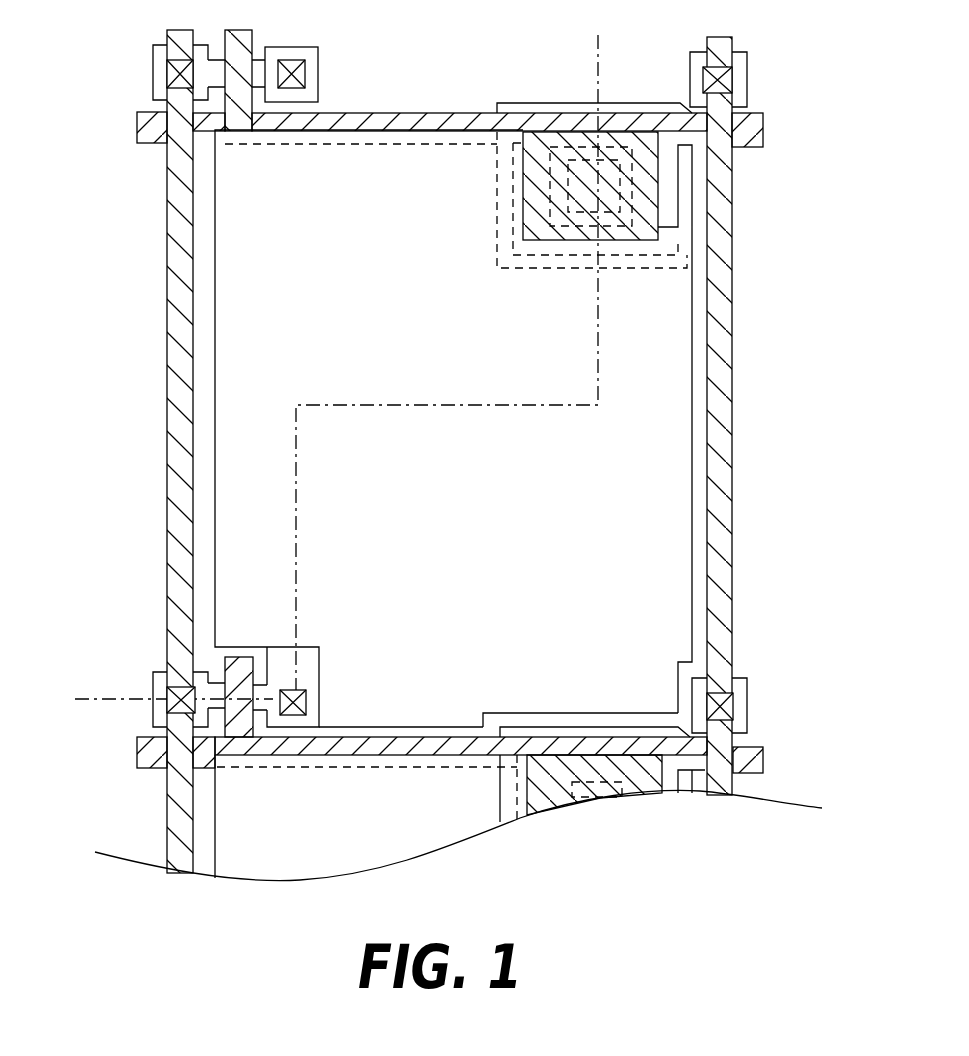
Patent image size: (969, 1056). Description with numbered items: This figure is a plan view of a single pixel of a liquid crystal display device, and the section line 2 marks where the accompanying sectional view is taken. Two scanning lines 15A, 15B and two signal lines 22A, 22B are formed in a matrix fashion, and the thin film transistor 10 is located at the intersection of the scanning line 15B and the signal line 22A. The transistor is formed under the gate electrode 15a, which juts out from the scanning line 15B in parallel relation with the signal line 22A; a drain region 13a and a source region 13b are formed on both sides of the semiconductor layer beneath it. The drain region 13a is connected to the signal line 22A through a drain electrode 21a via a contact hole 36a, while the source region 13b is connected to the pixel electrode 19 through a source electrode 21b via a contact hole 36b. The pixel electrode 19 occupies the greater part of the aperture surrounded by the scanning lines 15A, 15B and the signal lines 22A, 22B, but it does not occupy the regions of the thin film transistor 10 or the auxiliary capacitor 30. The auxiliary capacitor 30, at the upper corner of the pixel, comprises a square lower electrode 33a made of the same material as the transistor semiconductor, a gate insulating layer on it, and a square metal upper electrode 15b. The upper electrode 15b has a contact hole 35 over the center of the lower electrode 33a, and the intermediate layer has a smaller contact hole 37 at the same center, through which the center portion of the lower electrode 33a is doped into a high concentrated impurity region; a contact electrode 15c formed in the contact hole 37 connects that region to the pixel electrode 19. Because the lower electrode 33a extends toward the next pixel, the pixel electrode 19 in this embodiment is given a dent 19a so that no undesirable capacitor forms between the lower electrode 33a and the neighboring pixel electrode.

The section line 2 is at (331, 358).
The thin film transistor 10 is at (308, 638).
The drain region 13a is at (219, 709).
The source region 13b is at (262, 711).
The scanning line 15A is at (145, 130).
The scanning line 15B is at (138, 765).
The gate electrode 15a is at (243, 667).
The upper electrode 15b is at (680, 252).
The contact electrode 15c is at (523, 232).
The pixel electrode 19 is at (695, 563).
The dent 19a is at (555, 712).
The drain electrode 21a is at (155, 682).
The source electrode 21b is at (317, 683).
The signal line 22A is at (168, 477).
The signal line 22B is at (733, 483).
The auxiliary capacitor 30 is at (515, 89).
The lower electrode 33a is at (635, 270).
The contact hole 35 is at (660, 156).
The contact hole 36a is at (157, 705).
The contact hole 36b is at (307, 705).
The contact hole 37 is at (620, 190).